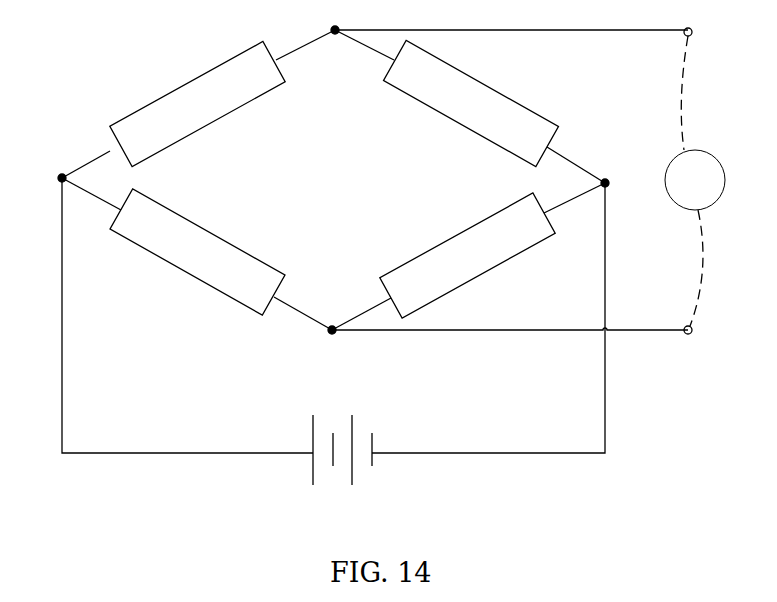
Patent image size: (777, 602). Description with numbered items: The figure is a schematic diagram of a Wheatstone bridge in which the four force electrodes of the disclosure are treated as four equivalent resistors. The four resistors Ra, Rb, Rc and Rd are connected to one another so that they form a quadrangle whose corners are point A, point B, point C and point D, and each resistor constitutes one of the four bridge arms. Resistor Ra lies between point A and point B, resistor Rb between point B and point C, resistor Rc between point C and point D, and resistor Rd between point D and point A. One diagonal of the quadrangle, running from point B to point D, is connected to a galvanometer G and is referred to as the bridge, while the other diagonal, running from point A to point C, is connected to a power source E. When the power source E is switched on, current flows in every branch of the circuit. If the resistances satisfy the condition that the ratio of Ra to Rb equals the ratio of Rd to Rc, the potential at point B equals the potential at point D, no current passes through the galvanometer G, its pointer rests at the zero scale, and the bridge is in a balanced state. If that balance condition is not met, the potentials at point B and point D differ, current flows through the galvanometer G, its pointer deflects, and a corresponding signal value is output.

The point A is at (52, 180).
The point B is at (333, 19).
The point C is at (614, 184).
The point D is at (331, 342).
The resistor Ra is at (197, 103).
The resistor Rb is at (471, 103).
The resistor Rc is at (467, 255).
The resistor Rd is at (197, 252).
The power source E is at (342, 462).
The galvanometer G is at (695, 181).